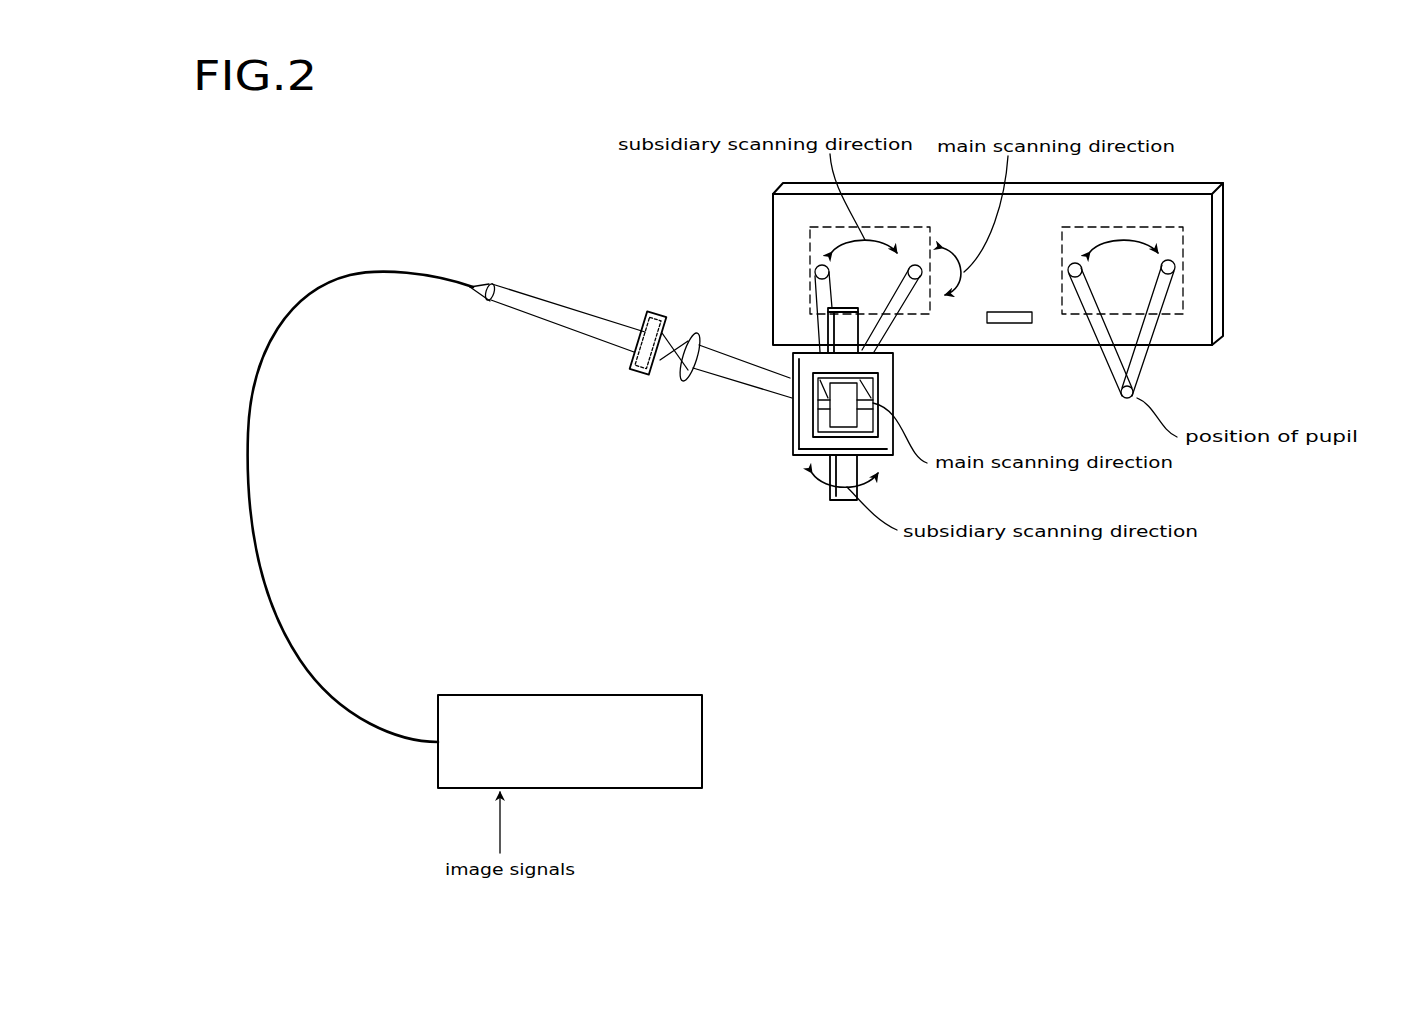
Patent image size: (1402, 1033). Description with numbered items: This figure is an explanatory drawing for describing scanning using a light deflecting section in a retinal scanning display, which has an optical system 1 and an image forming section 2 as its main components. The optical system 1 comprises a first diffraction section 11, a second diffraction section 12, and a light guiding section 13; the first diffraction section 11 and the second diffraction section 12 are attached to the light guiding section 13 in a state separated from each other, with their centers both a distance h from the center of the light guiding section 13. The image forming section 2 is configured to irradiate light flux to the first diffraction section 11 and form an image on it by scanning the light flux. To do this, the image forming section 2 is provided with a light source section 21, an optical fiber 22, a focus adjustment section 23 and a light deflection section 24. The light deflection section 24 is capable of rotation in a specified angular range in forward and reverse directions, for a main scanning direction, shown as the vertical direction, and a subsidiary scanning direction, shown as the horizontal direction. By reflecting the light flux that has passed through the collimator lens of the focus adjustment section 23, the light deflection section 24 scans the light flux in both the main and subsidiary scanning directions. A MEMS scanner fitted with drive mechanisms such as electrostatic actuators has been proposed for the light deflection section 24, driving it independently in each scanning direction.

The optical system 1 is at (1176, 79).
The image forming section 2 is at (532, 191).
The first diffraction section 11 is at (903, 227).
The second diffraction section 12 is at (1183, 247).
The light guiding section 13 is at (1195, 183).
The light source section 21 is at (702, 740).
The optical fiber 22 is at (330, 278).
The focus adjustment section 23 is at (691, 277).
The light deflection section 24 is at (906, 397).